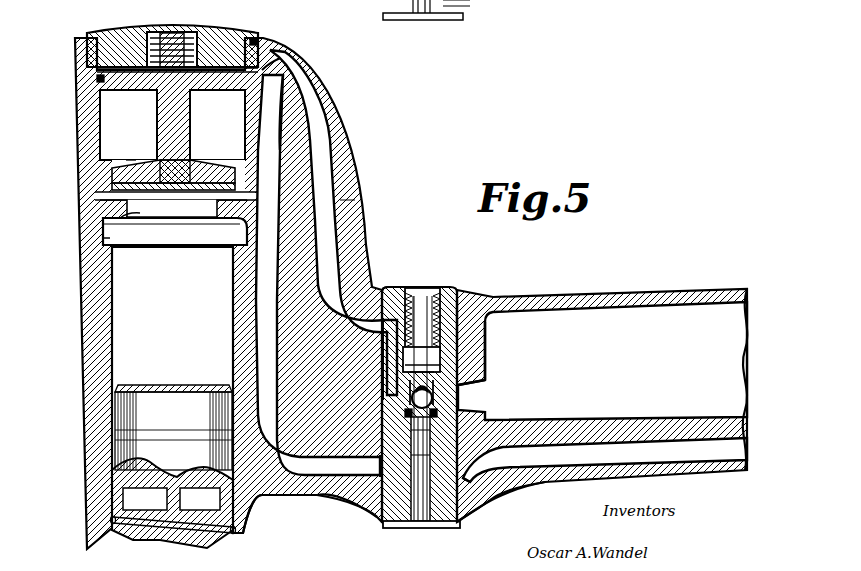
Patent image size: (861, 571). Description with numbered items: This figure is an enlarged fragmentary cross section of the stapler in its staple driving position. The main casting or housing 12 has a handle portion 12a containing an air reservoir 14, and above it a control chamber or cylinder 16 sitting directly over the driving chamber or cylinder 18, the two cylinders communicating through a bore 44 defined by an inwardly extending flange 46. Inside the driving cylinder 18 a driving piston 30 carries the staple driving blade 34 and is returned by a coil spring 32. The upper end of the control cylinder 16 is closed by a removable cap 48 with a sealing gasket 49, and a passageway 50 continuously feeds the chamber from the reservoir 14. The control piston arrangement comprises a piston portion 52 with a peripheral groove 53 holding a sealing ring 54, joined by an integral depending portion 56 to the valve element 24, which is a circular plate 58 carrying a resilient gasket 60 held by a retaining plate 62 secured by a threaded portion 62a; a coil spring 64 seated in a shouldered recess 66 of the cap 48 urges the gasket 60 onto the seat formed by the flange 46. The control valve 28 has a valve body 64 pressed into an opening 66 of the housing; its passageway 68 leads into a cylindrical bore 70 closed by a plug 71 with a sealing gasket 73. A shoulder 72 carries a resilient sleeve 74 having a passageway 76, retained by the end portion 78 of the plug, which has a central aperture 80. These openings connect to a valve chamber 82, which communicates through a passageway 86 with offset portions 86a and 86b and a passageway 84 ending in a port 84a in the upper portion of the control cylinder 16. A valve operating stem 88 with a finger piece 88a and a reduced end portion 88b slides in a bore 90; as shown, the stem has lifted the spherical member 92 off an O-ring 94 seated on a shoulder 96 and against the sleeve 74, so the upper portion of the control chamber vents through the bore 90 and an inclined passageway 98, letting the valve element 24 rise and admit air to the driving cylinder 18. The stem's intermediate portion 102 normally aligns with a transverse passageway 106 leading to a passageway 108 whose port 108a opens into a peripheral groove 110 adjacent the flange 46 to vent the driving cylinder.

The housing 12 is at (257, 505).
The handle portion 12a is at (708, 288).
The air reservoir 14 is at (660, 310).
The control chamber 16 is at (100, 118).
The driving chamber 18 is at (130, 322).
The valve element 24 is at (134, 154).
The control valve 28 is at (457, 245).
The driving piston 30 is at (120, 415).
The coil spring 32 is at (140, 527).
The staple driving blade 34 is at (170, 518).
The bore 44 is at (113, 232).
The flange 46 is at (118, 210).
The cap 48 is at (125, 28).
The sealing gasket 49 is at (260, 42).
The passageway 50 is at (280, 140).
The piston portion 52 is at (138, 78).
The peripheral groove 53 is at (245, 95).
The sealing ring 54 is at (100, 80).
The depending portion 56 is at (160, 118).
The circular plate 58 is at (118, 168).
The resilient gasket 60 is at (110, 184).
The retaining plate 62 is at (128, 218).
The threaded portion 62a is at (190, 170).
The coil spring 64 is at (157, 32).
The shouldered recess 66 is at (180, 33).
The passageway 68 is at (487, 335).
The cylindrical bore 70 is at (400, 288).
The plug 71 is at (428, 330).
The shoulder 72 is at (470, 392).
The sealing gasket 73 is at (436, 320).
The resilient sleeve 74 is at (486, 352).
The passageway 76 is at (392, 390).
The end portion 78 is at (458, 325).
The aperture 80 is at (408, 350).
The valve chamber 82 is at (455, 405).
The passageway 84 is at (313, 137).
The port 84a is at (262, 70).
The passageway 86 is at (390, 350).
The offset portion 86a is at (388, 325).
The offset portion 86b is at (327, 465).
The valve operating stem 88 is at (414, 527).
The finger piece 88a is at (427, 528).
The end portion 88b is at (460, 470).
The bore 90 is at (388, 462).
The spherical member 92 is at (400, 410).
The O-ring 94 is at (460, 425).
The shoulder 96 is at (483, 425).
The inclined passageway 98 is at (487, 503).
The intermediate portion 102 is at (377, 507).
The transverse passageway 106 is at (463, 510).
The passageway 108 is at (258, 252).
The port 108a is at (343, 197).
The peripheral groove 110 is at (103, 240).